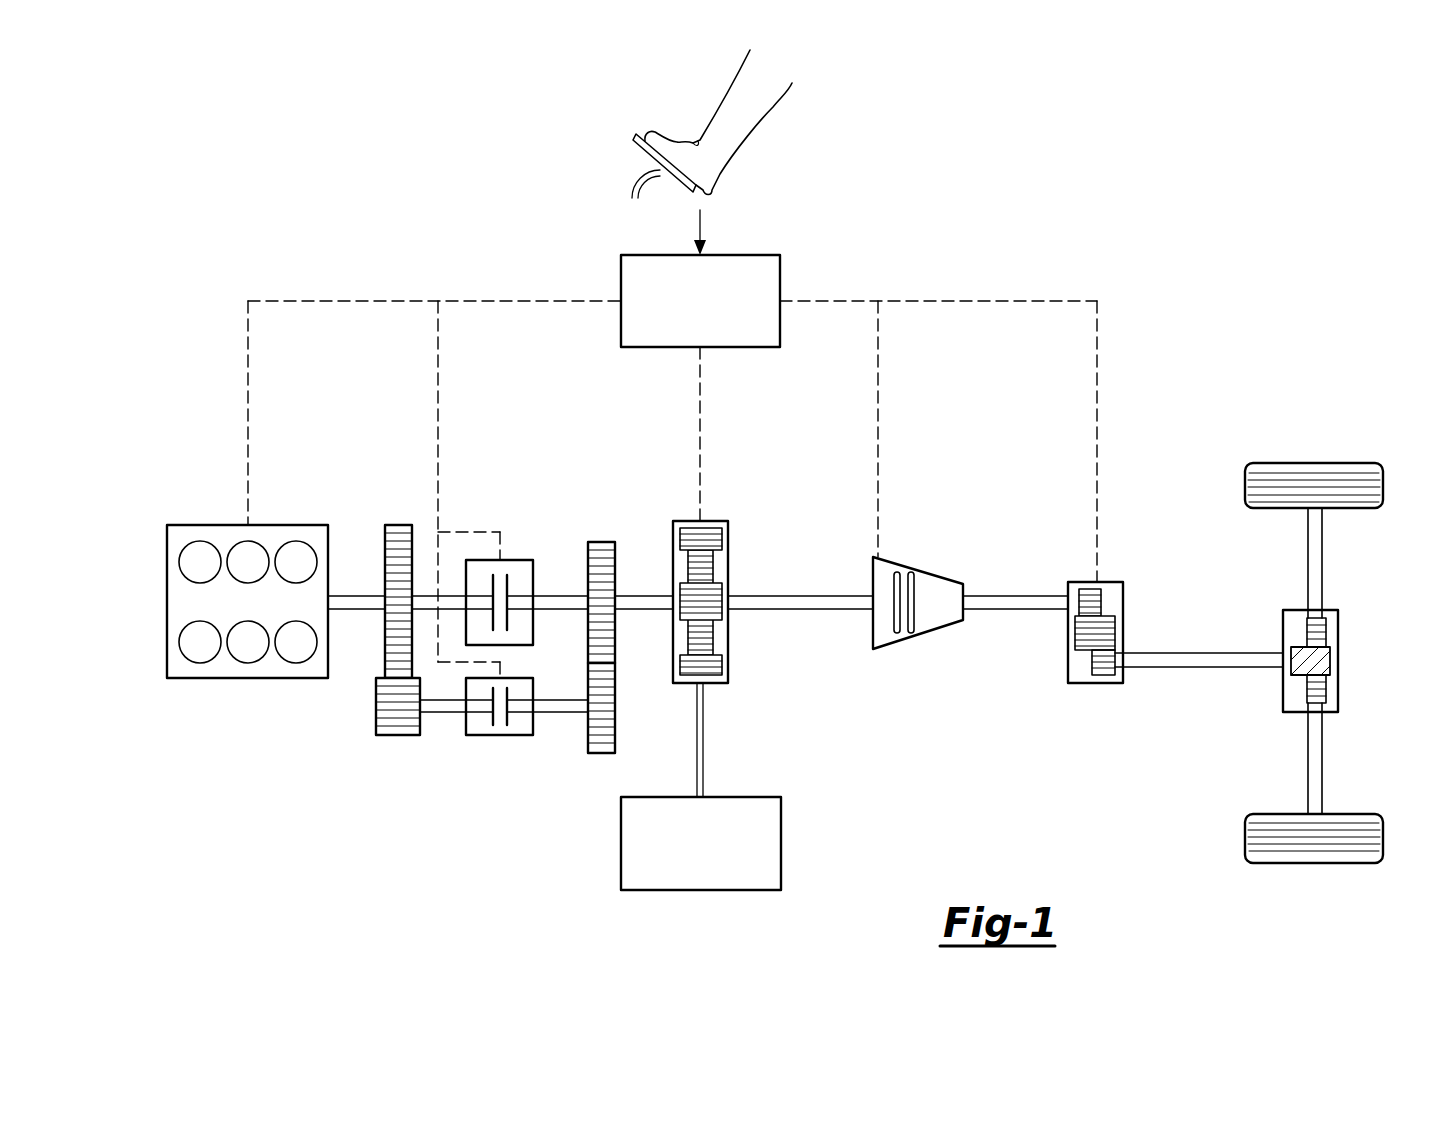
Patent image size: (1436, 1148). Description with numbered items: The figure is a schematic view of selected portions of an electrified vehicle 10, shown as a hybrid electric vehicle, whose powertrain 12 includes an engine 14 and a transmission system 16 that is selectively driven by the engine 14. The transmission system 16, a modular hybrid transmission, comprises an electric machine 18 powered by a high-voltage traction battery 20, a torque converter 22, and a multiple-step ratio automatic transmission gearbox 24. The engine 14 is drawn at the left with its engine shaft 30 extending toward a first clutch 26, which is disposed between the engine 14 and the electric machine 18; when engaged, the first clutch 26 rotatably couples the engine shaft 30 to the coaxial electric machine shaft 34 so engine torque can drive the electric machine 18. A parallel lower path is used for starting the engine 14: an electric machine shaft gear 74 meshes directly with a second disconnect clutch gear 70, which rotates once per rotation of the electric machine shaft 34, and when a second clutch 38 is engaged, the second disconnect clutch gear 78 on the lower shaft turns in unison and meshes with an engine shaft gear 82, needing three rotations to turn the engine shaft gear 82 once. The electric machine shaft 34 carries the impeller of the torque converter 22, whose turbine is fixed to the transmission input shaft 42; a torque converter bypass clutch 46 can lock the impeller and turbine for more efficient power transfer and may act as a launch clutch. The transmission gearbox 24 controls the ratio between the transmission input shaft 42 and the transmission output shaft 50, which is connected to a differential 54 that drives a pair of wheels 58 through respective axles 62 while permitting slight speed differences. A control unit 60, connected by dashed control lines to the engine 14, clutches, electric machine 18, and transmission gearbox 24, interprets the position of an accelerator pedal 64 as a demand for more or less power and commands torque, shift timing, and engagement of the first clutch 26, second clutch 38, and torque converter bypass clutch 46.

The electrified vehicle 10 is at (1234, 330).
The powertrain 12 is at (1042, 250).
The engine 14 is at (191, 525).
The transmission system 16 is at (939, 505).
The electric machine 18 is at (728, 530).
The high-voltage traction battery 20 is at (781, 838).
The torque converter 22 is at (935, 593).
The transmission gearbox 24 is at (1123, 590).
The first clutch 26 is at (521, 560).
The engine shaft 30 is at (360, 594).
The electric machine shaft 34 is at (648, 595).
The second clutch 38 is at (500, 737).
The transmission input shaft 42 is at (1006, 595).
The torque converter bypass clutch 46 is at (897, 572).
The transmission output shaft 50 is at (1203, 670).
The differential 54 is at (1338, 661).
The wheels 58 is at (1313, 865).
The control unit 60 is at (780, 268).
The axles 62 is at (1322, 562).
The accelerator pedal 64 is at (633, 143).
The second disconnect clutch gear 70 is at (615, 733).
The electric machine shaft gear 74 is at (615, 627).
The second disconnect clutch gear 78 is at (376, 728).
The engine shaft gear 82 is at (383, 645).